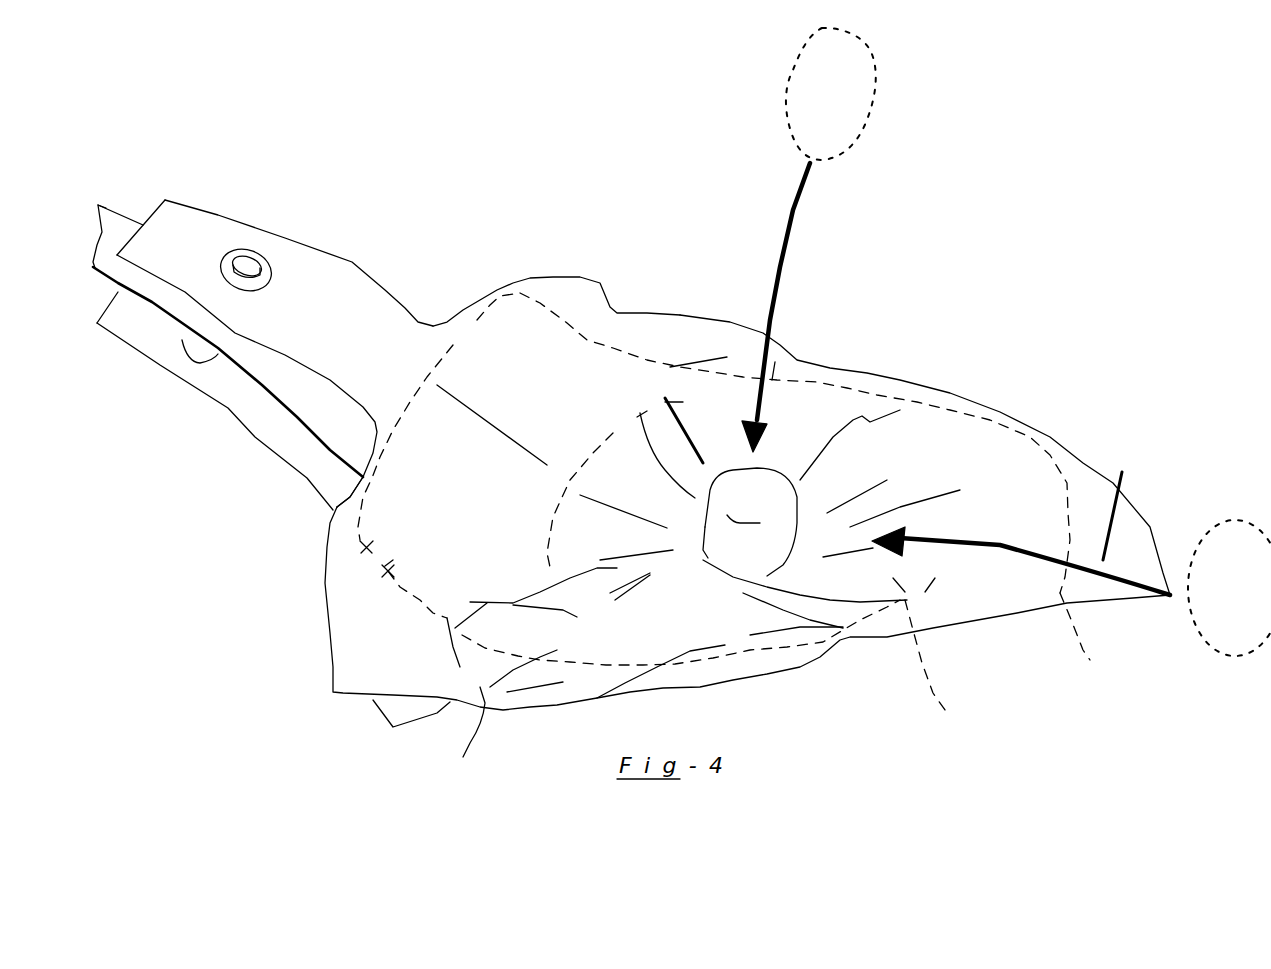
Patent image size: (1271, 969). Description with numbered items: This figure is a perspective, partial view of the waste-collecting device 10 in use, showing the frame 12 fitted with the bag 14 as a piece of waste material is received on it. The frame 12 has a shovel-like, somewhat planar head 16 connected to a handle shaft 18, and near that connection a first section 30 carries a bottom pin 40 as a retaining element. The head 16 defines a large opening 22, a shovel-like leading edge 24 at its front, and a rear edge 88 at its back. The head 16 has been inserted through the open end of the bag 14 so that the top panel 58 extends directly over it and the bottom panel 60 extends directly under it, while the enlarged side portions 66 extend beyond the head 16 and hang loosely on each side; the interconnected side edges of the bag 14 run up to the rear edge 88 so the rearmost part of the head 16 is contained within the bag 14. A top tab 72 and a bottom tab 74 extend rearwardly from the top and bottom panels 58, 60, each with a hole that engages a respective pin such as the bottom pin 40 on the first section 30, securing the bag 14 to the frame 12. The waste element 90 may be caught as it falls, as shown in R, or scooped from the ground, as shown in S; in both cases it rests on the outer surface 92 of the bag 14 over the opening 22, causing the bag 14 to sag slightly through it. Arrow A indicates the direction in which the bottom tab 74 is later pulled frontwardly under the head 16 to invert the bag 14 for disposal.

The device 10 is at (902, 238).
The frame 12 is at (130, 220).
The bag 14 is at (205, 212).
The head 16 is at (337, 650).
The handle shaft 18 is at (162, 292).
The opening 22 is at (944, 668).
The leading edge 24 is at (1091, 638).
The first section 30 is at (249, 258).
The bottom pin 40 is at (195, 357).
The top panel 58 is at (418, 328).
The bottom panel 60 is at (308, 479).
The side portions 66 is at (690, 320).
The top tab 72 is at (337, 305).
The bottom tab 74 is at (272, 413).
The rear edge 88 is at (350, 558).
The waste element 90 is at (767, 498).
The outer surface 92 is at (993, 447).
The catching direction R is at (792, 210).
The scooping direction S is at (1071, 548).
The arrow A is at (152, 432).